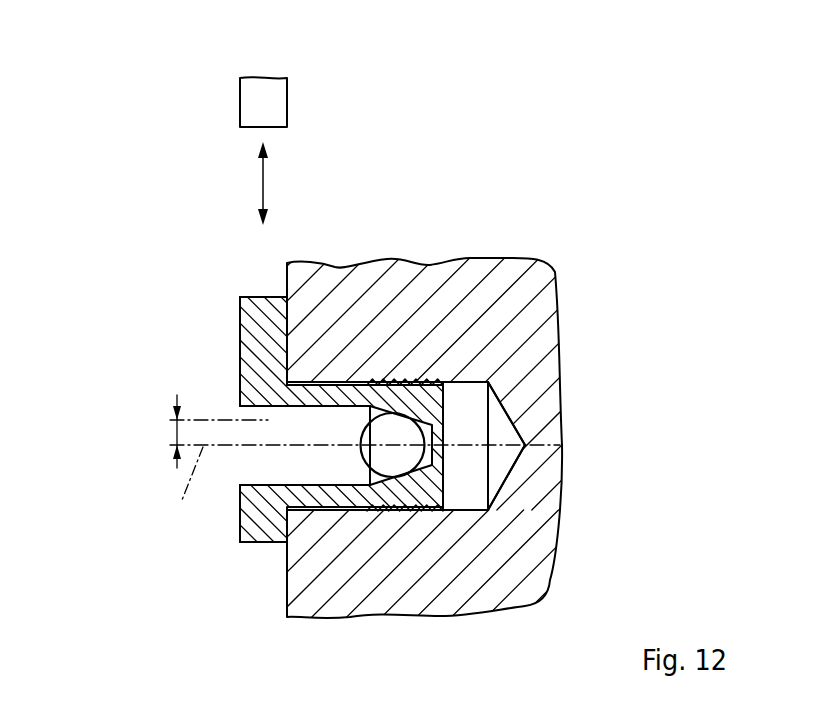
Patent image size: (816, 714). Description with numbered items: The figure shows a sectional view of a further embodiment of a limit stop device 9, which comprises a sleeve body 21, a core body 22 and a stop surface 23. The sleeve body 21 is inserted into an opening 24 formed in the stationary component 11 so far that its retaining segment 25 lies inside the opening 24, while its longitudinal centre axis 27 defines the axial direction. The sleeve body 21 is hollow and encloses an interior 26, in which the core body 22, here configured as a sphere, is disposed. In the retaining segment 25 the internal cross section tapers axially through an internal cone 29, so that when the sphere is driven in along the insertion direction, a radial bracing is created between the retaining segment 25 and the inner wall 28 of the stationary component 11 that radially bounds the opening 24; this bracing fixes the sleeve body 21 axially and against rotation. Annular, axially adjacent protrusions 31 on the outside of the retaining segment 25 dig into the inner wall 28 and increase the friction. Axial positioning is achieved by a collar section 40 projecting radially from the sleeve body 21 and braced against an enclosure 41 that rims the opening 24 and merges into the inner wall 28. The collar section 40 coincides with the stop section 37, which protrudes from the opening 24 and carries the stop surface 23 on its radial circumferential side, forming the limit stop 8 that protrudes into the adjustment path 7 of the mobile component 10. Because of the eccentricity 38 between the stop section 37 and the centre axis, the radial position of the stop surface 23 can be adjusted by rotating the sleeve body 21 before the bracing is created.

The adjustment path 7 is at (263, 182).
The limit stop 8 is at (272, 297).
The limit stop device 9 is at (124, 210).
The mobile component 10 is at (239, 103).
The stationary component 11 is at (348, 258).
The sleeve body 21 is at (233, 528).
The core body 22 is at (432, 434).
The stop surface 23 is at (250, 295).
The opening 24 is at (468, 497).
The retaining segment 25 is at (390, 512).
The interior 26 is at (338, 462).
The longitudinal centre axis 27 is at (183, 498).
The inner wall 28 is at (550, 402).
The internal cone 29 is at (450, 432).
The protrusion 31 is at (440, 512).
The stop section 37 is at (257, 342).
The eccentricity 38 is at (176, 431).
The collar section 40 is at (260, 532).
The enclosure 41 is at (262, 375).